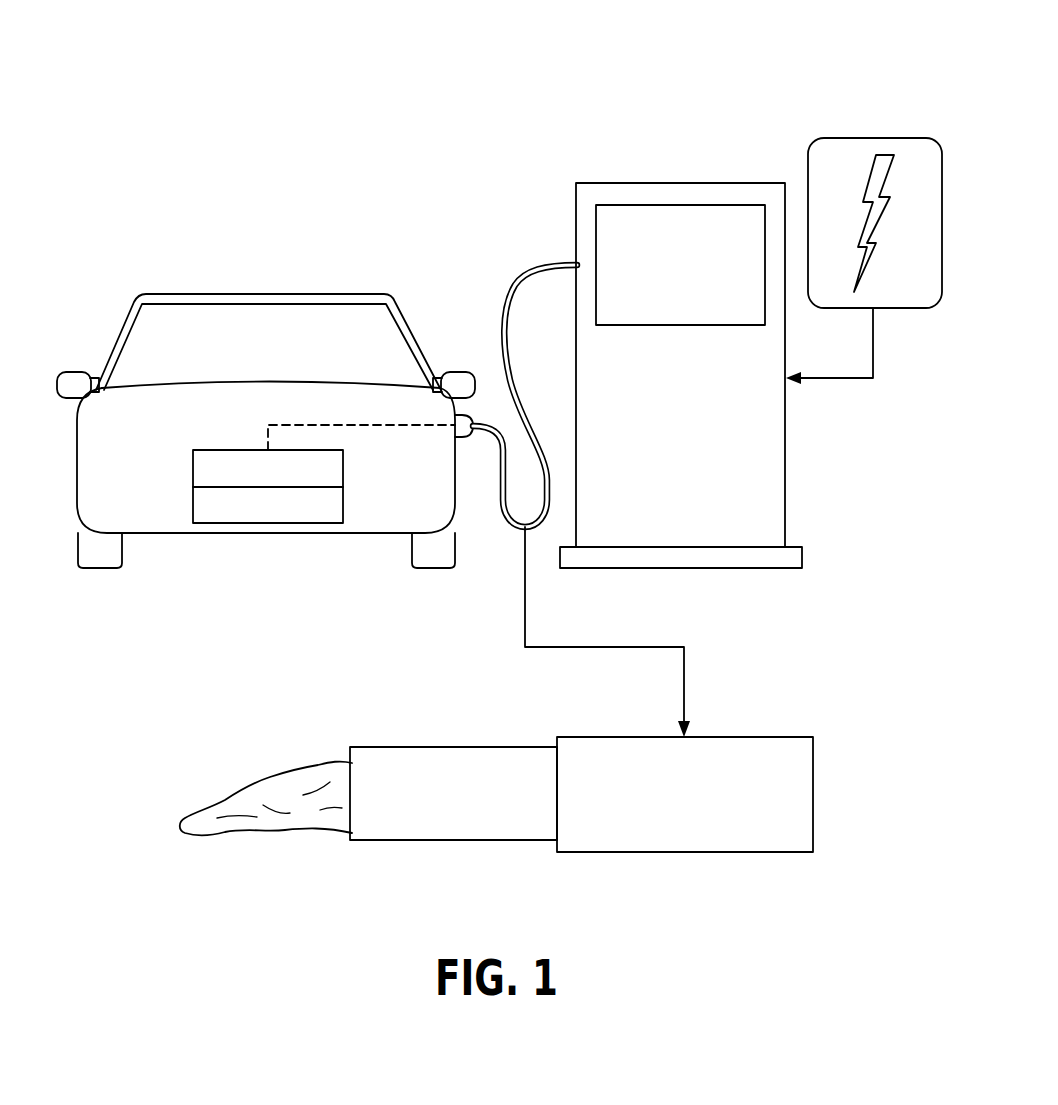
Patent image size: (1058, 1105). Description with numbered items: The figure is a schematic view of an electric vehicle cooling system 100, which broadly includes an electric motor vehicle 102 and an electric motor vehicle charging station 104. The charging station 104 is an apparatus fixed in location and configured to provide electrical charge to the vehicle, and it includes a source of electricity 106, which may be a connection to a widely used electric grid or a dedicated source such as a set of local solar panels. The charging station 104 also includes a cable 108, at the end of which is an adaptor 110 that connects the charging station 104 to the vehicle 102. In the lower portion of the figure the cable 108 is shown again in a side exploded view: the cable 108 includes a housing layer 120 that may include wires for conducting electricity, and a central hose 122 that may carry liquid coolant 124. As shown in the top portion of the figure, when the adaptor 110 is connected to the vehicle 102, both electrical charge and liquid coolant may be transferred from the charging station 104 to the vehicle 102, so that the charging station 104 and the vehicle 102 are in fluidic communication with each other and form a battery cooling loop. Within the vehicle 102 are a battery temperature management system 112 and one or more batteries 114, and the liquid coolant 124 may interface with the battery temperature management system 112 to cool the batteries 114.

The electric vehicle cooling system 100 is at (334, 88).
The electric motor vehicle 102 is at (268, 293).
The electric motor vehicle charging station 104 is at (677, 182).
The source of electricity 106 is at (875, 138).
The cable 108 is at (504, 296).
The adaptor 110 is at (461, 438).
The battery temperature management system 112 is at (193, 470).
The batteries 114 is at (193, 500).
The housing layer 120 is at (670, 852).
The central hose 122 is at (447, 842).
The liquid coolant 124 is at (292, 835).